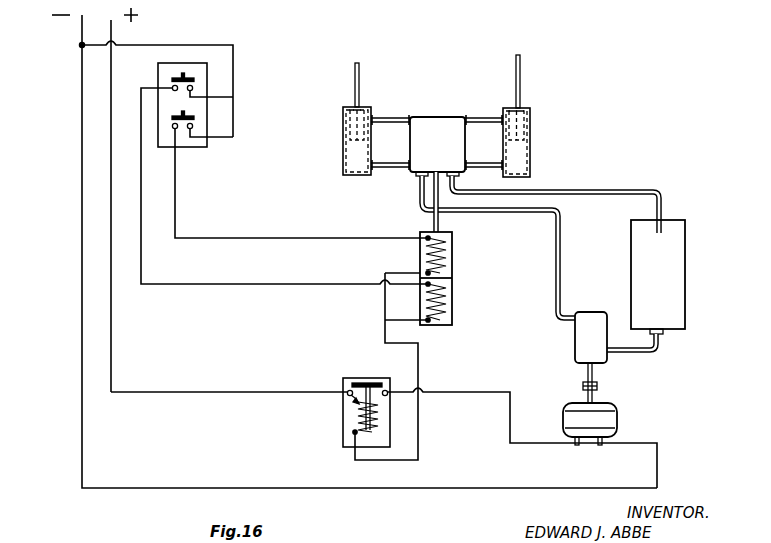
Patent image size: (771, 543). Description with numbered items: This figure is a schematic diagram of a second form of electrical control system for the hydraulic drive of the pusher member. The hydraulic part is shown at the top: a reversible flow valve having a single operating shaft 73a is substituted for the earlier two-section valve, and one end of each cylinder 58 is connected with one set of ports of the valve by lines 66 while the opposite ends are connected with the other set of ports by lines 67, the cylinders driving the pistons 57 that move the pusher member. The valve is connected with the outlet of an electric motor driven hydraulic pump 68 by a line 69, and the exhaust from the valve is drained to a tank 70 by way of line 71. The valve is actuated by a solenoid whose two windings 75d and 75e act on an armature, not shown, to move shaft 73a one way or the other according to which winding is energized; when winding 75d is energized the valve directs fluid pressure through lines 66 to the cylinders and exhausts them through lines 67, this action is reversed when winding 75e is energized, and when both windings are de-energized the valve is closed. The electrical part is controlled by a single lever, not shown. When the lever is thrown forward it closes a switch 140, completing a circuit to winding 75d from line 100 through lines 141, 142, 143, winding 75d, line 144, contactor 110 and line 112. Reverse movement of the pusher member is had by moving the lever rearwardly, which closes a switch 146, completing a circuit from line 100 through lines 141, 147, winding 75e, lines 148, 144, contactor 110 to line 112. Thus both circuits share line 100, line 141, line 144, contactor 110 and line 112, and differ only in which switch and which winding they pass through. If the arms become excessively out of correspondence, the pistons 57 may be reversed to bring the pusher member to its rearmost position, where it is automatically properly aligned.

The line 100 is at (82, 37).
The switch 146 is at (168, 76).
The switch 140 is at (190, 113).
The line 141 is at (233, 72).
The line 142 is at (233, 127).
The line 143 is at (268, 238).
The line 147 is at (141, 270).
The line 144 is at (385, 318).
The line 148 is at (402, 321).
The line 112 is at (252, 392).
The contactor 110 is at (355, 418).
The line 66 is at (478, 120).
The line 67 is at (486, 163).
The piston 57 is at (520, 85).
The cylinder 58 is at (530, 132).
The line 69 is at (561, 242).
The line 71 is at (639, 192).
The operating shaft 73a is at (433, 222).
The tank 70 is at (678, 250).
The hydraulic pump 68 is at (598, 313).
The winding 75d is at (442, 252).
The winding 75e is at (442, 306).